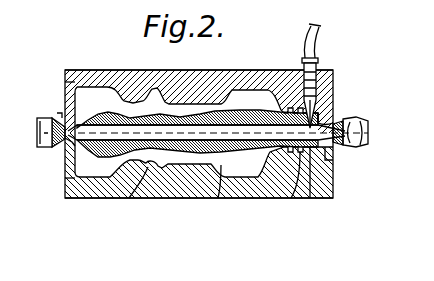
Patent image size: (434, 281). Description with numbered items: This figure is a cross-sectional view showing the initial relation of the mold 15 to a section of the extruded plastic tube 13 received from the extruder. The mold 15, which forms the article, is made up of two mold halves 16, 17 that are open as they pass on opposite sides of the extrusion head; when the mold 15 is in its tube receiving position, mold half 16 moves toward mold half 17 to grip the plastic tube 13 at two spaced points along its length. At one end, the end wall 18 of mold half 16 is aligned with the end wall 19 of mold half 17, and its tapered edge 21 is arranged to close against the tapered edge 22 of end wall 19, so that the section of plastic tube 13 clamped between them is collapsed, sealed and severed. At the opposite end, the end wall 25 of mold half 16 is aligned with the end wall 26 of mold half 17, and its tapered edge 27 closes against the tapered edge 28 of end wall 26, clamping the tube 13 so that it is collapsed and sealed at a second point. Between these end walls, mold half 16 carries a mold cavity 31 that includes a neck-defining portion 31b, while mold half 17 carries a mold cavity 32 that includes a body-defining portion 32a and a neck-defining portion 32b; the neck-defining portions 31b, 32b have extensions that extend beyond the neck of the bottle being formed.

The plastic tube 13 is at (53, 117).
The mold 15 is at (198, 67).
The mold half 16 is at (93, 70).
The mold half 17 is at (82, 198).
The end wall 18 is at (64, 82).
The end wall 19 is at (72, 178).
The tapered edge 21 is at (38, 134).
The tapered edge 22 is at (70, 160).
The end wall 25 is at (333, 102).
The end wall 26 is at (335, 160).
The tapered edge 27 is at (335, 119).
The tapered edge 28 is at (334, 143).
The mold cavity 31 is at (146, 96).
The neck-defining portion 31b is at (333, 80).
The mold cavity 32 is at (129, 198).
The body-defining portion 32a is at (218, 198).
The neck-defining portion 32b is at (291, 198).